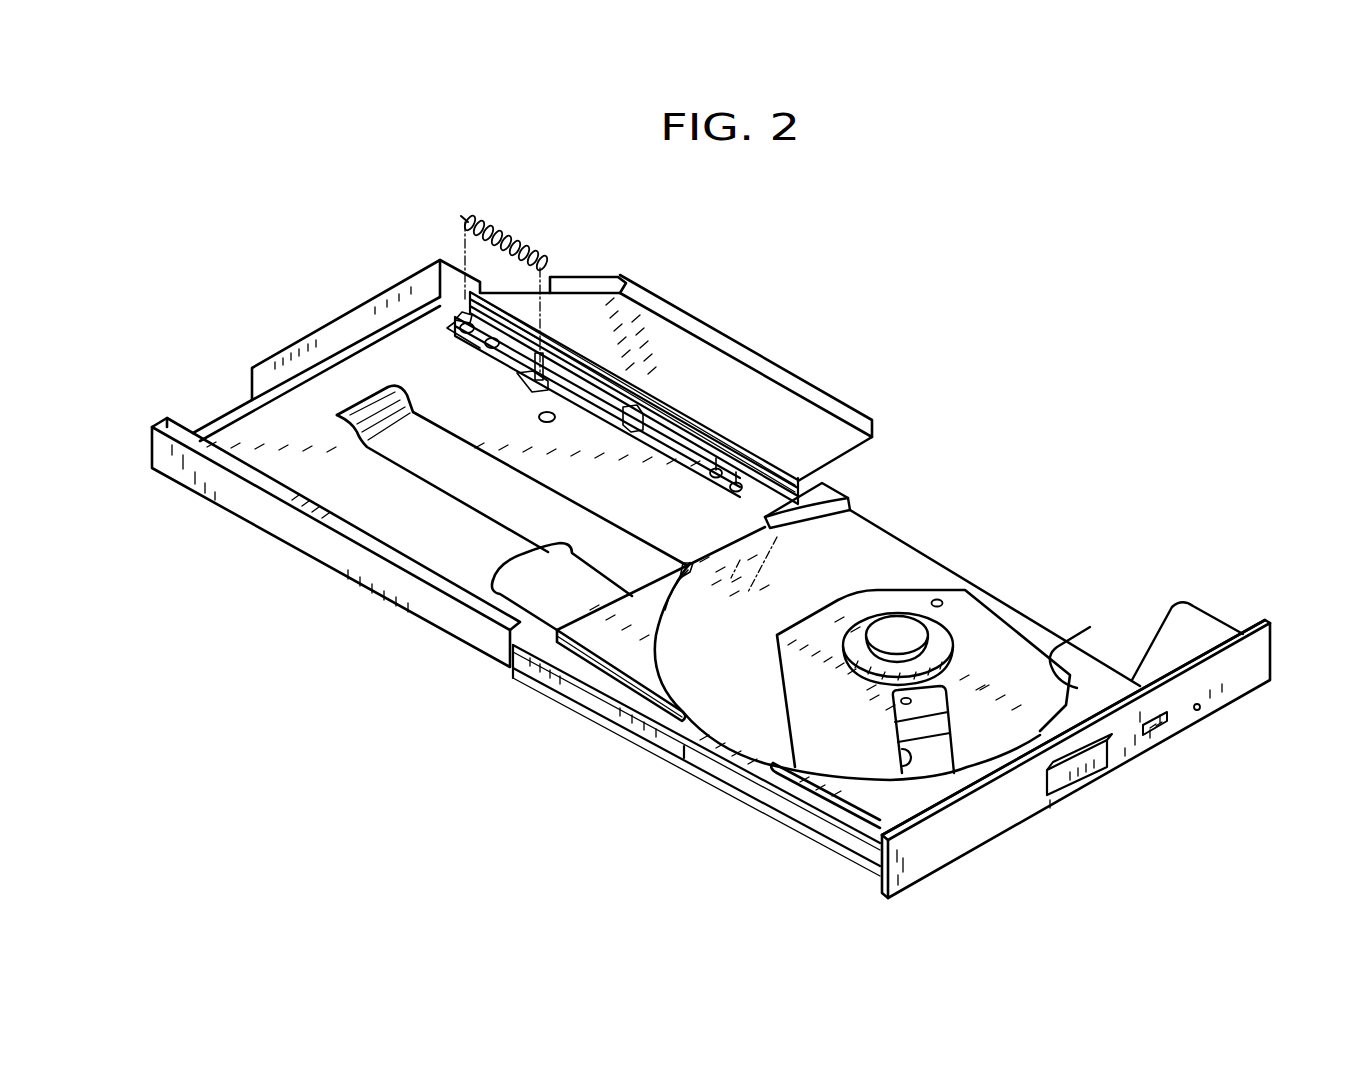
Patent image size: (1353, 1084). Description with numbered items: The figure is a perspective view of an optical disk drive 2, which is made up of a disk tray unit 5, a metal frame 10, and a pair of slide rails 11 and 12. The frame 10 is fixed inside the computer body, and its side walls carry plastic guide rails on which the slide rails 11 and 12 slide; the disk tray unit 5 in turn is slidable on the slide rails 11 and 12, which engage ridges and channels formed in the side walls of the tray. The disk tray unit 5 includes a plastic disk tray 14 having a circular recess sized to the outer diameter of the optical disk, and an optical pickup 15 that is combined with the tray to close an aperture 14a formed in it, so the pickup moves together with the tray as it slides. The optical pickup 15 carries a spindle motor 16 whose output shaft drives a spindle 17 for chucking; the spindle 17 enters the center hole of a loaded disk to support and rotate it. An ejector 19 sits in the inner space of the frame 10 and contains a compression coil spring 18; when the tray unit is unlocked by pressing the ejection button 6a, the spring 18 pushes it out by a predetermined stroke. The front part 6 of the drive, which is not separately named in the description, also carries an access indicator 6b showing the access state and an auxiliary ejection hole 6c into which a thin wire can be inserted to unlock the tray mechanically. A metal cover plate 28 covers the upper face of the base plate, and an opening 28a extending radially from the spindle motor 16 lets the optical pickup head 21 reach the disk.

The optical disk drive 2 is at (1007, 416).
The disk tray unit 5 is at (863, 517).
The front panel 6 is at (990, 832).
The ejection button 6a is at (1085, 778).
The access indicator 6b is at (1157, 724).
The auxiliary ejection hole 6c is at (1200, 708).
The frame 10 is at (233, 432).
The slide rail 11 is at (767, 488).
The slide rail 12 is at (558, 683).
The disk tray 14 is at (1107, 675).
The aperture 14a is at (1050, 655).
The optical pickup 15 is at (1003, 637).
The spindle motor 16 is at (947, 627).
The spindle 17 is at (887, 632).
The compression coil spring 18 is at (514, 245).
The ejector 19 is at (468, 347).
The optical pickup head 21 is at (898, 714).
The cover plate 28 is at (798, 670).
The opening 28a is at (901, 757).